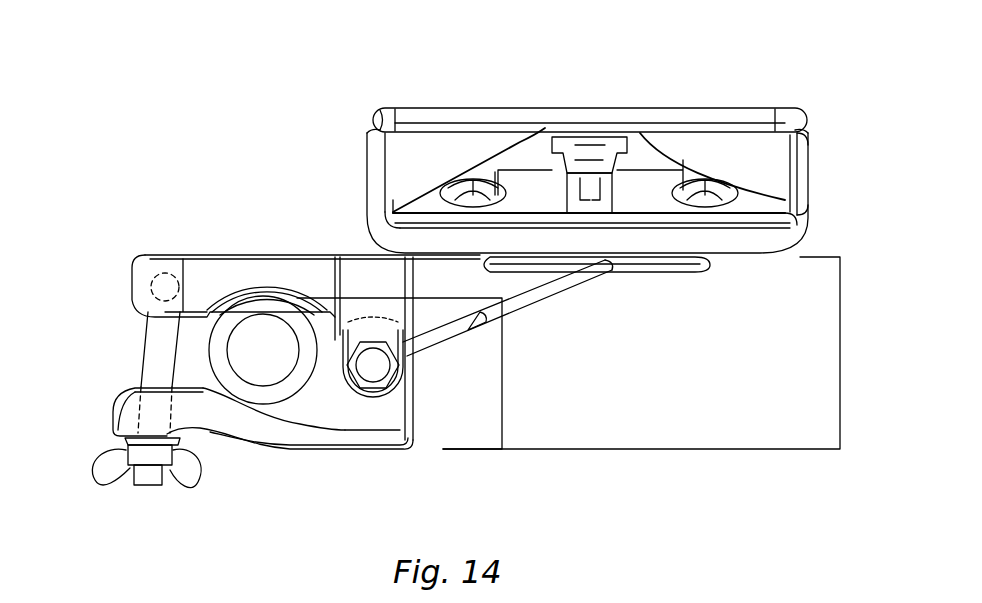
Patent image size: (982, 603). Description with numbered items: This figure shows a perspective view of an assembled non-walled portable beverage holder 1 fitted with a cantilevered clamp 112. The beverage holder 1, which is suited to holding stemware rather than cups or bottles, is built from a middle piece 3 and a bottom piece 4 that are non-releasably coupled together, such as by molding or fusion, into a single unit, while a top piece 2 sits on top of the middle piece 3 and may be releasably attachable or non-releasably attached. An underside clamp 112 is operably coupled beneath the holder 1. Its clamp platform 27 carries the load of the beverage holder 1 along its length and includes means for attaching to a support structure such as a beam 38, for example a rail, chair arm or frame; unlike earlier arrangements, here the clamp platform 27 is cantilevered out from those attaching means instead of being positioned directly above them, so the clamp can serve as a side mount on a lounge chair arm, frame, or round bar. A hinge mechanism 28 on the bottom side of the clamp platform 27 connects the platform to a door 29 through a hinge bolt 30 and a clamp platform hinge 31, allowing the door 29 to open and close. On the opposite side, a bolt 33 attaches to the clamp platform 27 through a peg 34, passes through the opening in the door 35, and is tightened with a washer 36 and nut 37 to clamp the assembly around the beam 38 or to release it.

The non-walled portable beverage holder 1 is at (345, 80).
The top piece 2 is at (470, 108).
The middle piece 3 is at (787, 140).
The bottom piece 4 is at (743, 253).
The clamp platform 27 is at (653, 272).
The hinge mechanism 28 is at (502, 365).
The door 29 is at (400, 432).
The hinge bolt 30 is at (392, 368).
The clamp platform hinge 31 is at (407, 378).
The bolt 33 is at (152, 356).
The peg 34 is at (150, 287).
The opening in the door 35 is at (140, 408).
The washer 36 is at (183, 445).
The nut 37 is at (183, 480).
The beam 38 is at (267, 392).
The underside clamp 112 is at (840, 343).